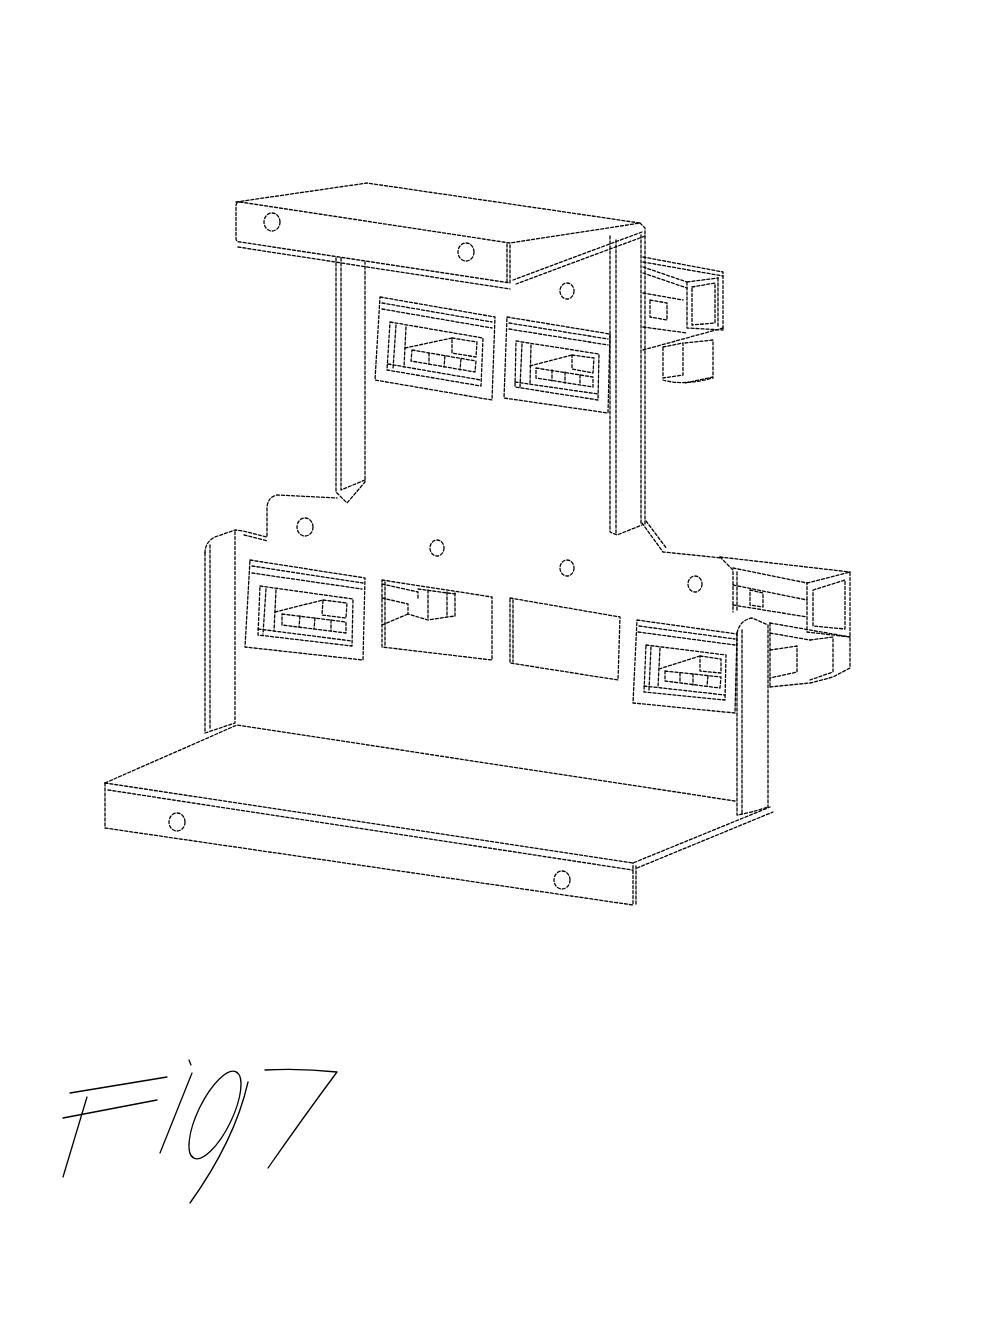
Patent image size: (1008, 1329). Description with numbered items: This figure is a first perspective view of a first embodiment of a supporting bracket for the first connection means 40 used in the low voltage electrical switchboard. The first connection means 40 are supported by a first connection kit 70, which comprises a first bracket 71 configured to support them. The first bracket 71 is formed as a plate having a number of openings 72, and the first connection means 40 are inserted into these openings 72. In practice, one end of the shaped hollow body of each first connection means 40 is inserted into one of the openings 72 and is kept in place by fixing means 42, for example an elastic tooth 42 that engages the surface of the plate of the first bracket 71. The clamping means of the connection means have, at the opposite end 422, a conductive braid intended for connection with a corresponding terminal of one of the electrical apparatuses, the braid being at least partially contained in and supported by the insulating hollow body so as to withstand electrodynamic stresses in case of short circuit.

The first connection kit 70 is at (180, 103).
The first bracket 71 is at (470, 212).
The openings 72 is at (588, 640).
The first connection means 40 is at (715, 252).
The fixing means 42 is at (277, 642).
The opposite end 422 is at (287, 605).